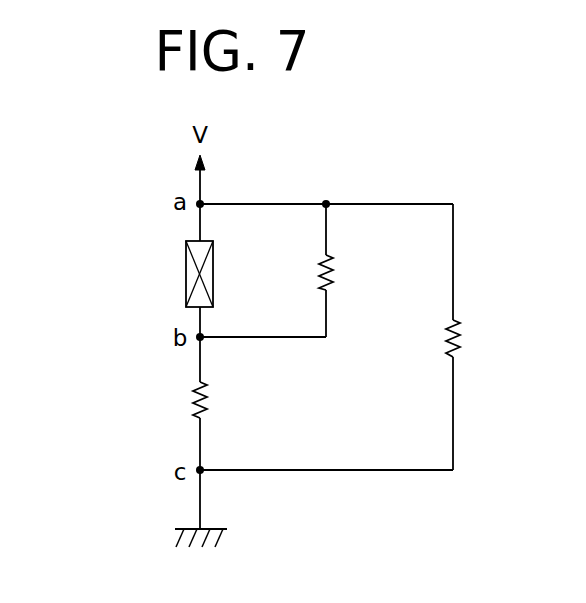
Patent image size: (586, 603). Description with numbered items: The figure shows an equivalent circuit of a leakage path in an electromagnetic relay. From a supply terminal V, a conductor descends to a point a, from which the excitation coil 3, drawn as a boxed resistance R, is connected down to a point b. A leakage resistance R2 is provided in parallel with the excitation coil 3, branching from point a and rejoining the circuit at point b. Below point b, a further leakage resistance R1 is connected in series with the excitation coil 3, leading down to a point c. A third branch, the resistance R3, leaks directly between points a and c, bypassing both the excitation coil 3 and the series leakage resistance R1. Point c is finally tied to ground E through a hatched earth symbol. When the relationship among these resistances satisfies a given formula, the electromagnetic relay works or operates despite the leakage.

The excitation coil 3 is at (186, 252).
The ground (earth) E is at (216, 537).
The leakage resistance R1 is at (219, 400).
The leakage resistance R2 is at (346, 270).
The resistance R3 is at (472, 337).